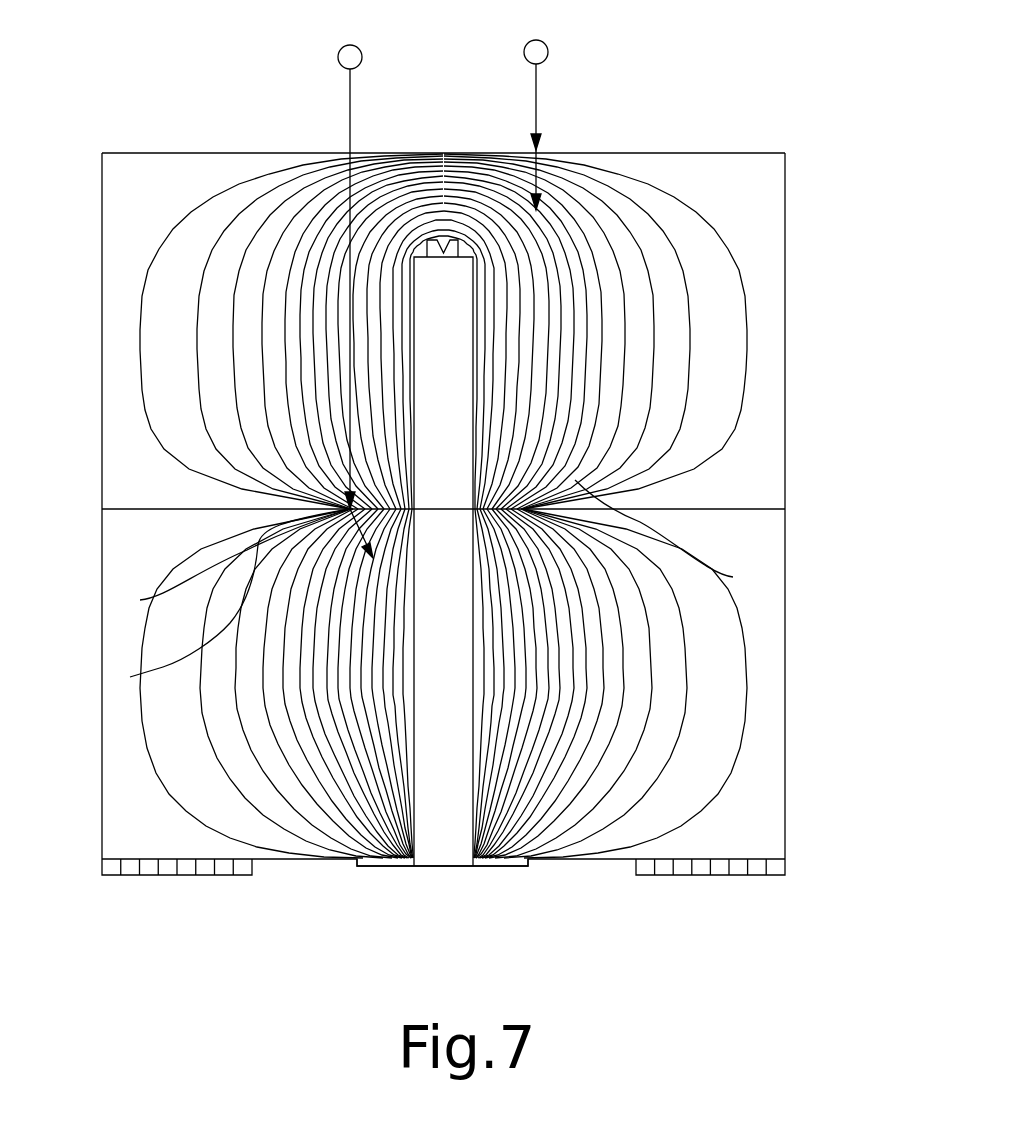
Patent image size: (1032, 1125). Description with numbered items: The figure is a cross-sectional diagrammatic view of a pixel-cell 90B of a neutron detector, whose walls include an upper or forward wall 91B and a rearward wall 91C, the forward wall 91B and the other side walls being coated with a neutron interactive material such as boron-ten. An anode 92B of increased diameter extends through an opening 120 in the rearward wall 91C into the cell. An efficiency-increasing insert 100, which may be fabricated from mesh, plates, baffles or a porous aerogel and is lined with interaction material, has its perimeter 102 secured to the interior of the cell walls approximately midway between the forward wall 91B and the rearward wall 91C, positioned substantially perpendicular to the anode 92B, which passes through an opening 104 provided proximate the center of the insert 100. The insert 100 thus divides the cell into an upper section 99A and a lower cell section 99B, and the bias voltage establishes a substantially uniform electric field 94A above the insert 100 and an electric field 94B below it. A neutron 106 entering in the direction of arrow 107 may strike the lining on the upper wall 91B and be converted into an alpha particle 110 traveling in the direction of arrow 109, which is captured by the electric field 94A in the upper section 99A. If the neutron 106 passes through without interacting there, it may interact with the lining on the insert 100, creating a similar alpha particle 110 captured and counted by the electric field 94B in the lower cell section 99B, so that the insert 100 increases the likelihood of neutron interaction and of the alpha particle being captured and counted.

The pixel-cell 90B is at (792, 317).
The forward wall 91B is at (190, 152).
The rearward wall 91C is at (603, 866).
The anode 92B is at (461, 468).
The electric field 94A is at (742, 235).
The electric field 94B is at (759, 775).
The upper section 99A is at (118, 338).
The lower cell section 99B is at (116, 766).
The insert 100 is at (740, 509).
The perimeter 102 is at (130, 509).
The opening 104 is at (733, 577).
The neutron 106 is at (361, 52).
The arrow 107 is at (352, 95).
The arrow 109 is at (130, 677).
The alpha particle 110 is at (140, 600).
The opening 120 is at (500, 866).